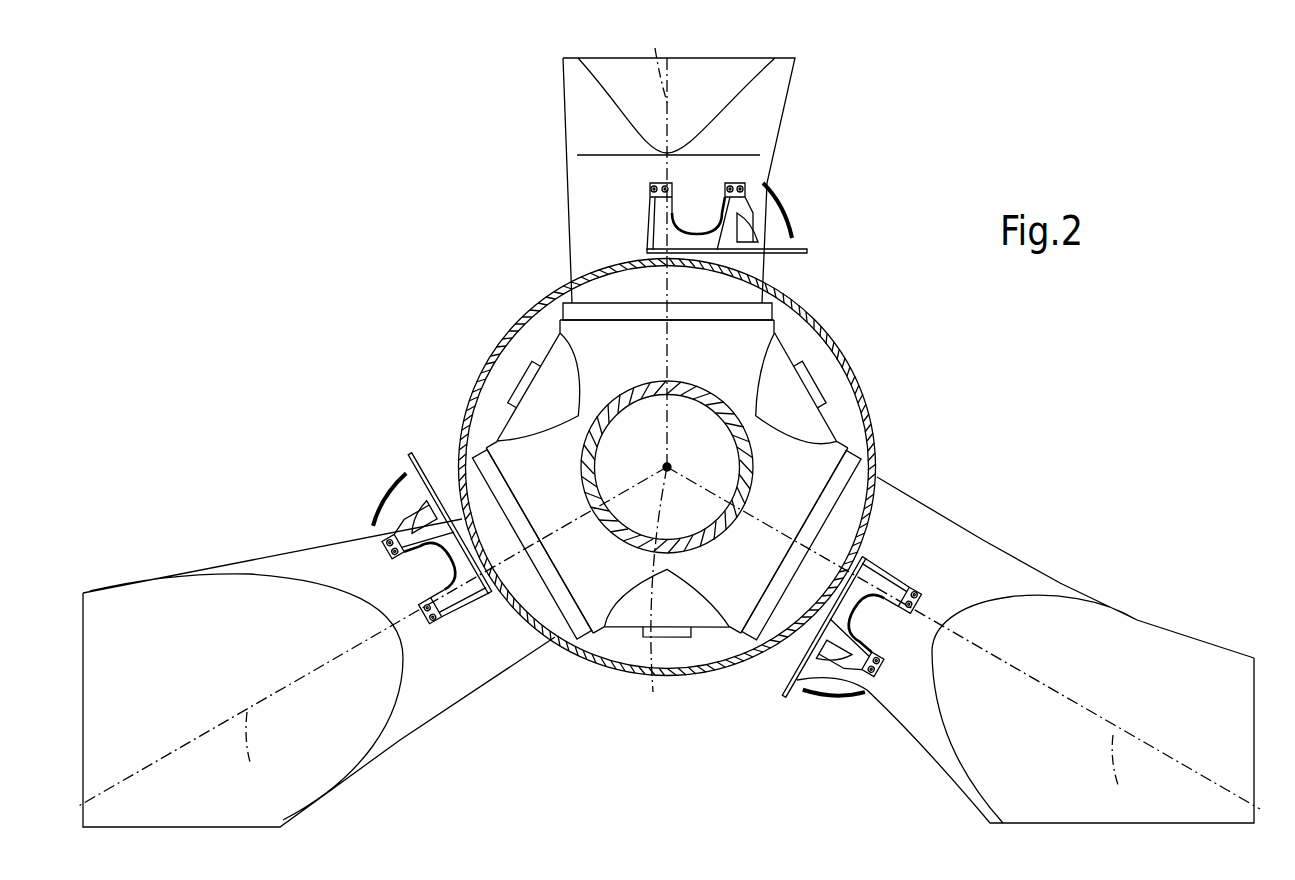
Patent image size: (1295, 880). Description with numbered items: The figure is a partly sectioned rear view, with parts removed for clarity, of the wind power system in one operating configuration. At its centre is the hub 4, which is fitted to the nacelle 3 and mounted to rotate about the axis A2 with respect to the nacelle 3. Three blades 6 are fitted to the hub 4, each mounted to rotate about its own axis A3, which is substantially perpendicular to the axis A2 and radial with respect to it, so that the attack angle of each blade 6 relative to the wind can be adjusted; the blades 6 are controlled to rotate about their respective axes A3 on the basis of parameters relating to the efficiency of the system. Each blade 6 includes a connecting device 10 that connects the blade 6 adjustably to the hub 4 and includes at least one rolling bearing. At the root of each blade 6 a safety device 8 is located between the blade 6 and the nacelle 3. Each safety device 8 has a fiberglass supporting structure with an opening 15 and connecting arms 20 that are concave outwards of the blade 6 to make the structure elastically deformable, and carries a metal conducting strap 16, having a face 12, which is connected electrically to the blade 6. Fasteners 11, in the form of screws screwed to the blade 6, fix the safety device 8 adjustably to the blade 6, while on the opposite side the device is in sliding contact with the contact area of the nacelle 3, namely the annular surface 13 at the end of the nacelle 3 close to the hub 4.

The nacelle 3 is at (865, 378).
The hub 4 is at (760, 381).
The blade 6 is at (1130, 653).
The safety device 8 is at (800, 687).
The connecting device 10 is at (868, 468).
The fastener 11 is at (855, 693).
The face 12 is at (768, 663).
The annular surface 13 is at (818, 313).
The opening 15 is at (800, 612).
The conducting strap 16 is at (800, 680).
The connecting arm 20 is at (840, 687).
The axis A2 is at (636, 592).
The axis A3 is at (684, 415).